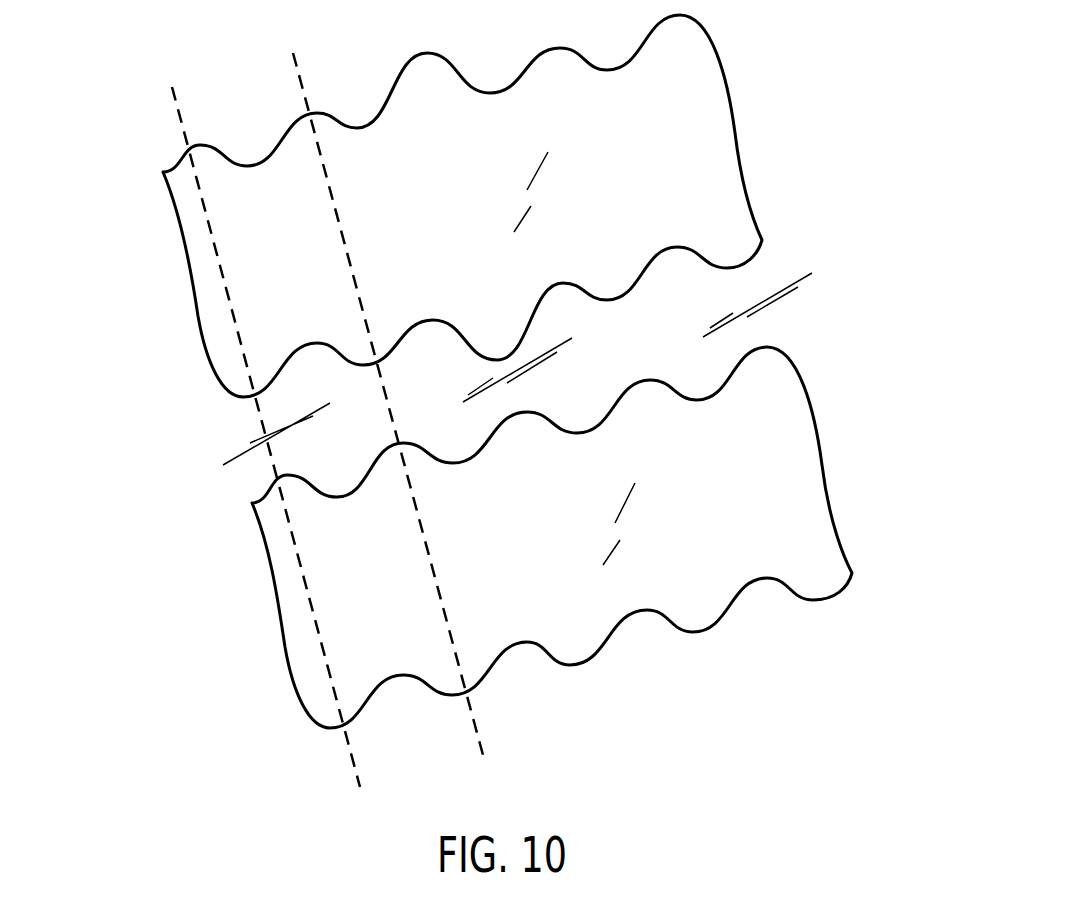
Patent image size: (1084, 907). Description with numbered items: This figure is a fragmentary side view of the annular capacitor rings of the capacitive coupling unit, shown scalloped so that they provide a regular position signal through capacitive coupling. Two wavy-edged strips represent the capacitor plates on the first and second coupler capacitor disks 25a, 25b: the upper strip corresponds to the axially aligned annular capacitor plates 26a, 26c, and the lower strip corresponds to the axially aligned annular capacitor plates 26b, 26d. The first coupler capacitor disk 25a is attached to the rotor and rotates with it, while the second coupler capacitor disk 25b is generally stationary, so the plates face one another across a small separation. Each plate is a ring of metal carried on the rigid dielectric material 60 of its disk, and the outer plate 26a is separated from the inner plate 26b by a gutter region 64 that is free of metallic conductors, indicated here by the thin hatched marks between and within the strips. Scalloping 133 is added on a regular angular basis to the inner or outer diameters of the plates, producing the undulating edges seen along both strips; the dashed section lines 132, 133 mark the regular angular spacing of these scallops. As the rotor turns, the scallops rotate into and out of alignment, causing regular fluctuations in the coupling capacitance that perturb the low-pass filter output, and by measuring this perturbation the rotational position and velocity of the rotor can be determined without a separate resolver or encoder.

The first coupler capacitor disk 25a is at (502, 371).
The second coupler capacitor disk 25b is at (502, 371).
The annular capacitor plate 26a is at (517, 206).
The annular capacitor plate 26b is at (607, 537).
The annular capacitor plate 26c is at (717, 147).
The annular capacitor plate 26d is at (807, 477).
The dielectric material 60 is at (242, 439).
The gutter region 64 is at (812, 305).
The section line 132 is at (412, 43).
The scalloping 133 is at (208, 77).